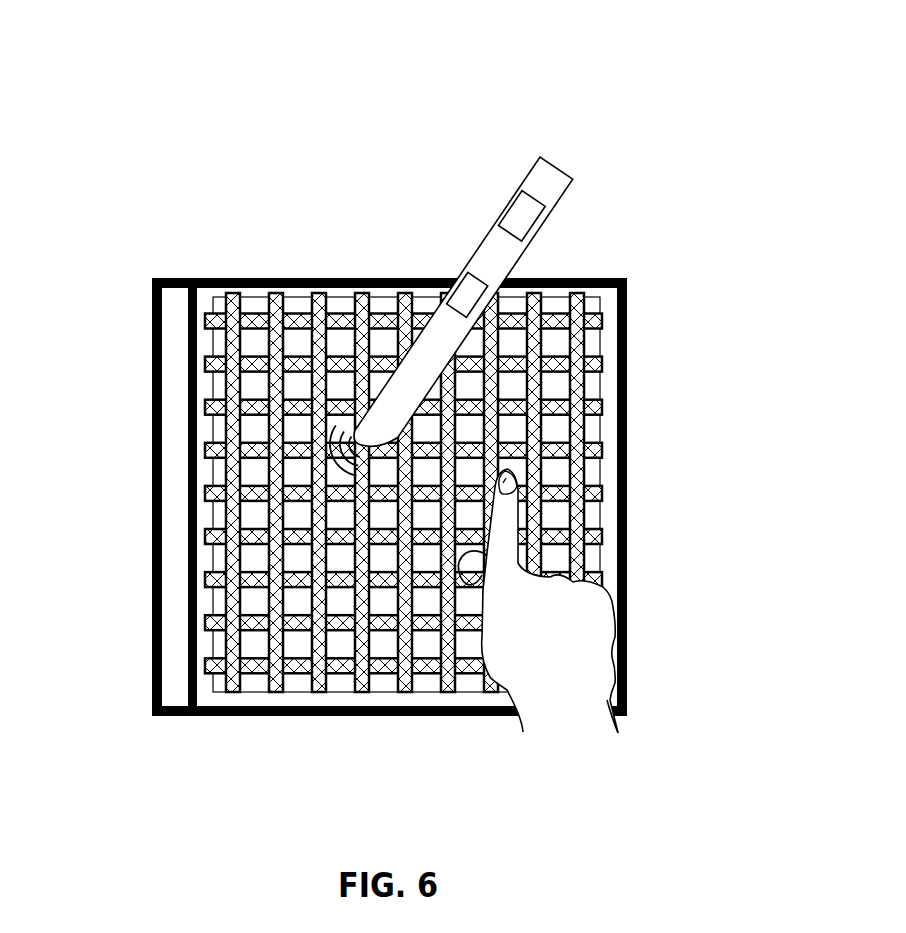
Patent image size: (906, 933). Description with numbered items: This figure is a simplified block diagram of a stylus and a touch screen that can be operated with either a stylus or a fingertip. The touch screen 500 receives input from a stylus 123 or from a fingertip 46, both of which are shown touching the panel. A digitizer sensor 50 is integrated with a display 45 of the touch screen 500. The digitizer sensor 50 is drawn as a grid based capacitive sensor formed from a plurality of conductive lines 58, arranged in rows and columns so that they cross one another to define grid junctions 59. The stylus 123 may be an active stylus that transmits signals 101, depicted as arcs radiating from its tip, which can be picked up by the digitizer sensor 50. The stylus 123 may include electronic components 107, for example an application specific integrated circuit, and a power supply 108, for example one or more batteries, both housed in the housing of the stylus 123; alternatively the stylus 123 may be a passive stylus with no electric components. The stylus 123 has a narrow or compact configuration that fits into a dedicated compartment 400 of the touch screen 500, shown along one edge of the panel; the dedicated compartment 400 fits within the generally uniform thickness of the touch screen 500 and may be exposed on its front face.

The touch screen 500 is at (395, 102).
The dedicated compartment 400 is at (155, 600).
The display 45 is at (537, 278).
The conductive lines 58 is at (403, 302).
The digitizer sensor 50 is at (603, 347).
The grid junctions 59 is at (362, 622).
The signals 101 is at (348, 446).
The stylus 123 is at (492, 230).
The power supply 108 is at (522, 202).
The electronic components 107 is at (463, 268).
The fingertip 46 is at (500, 481).